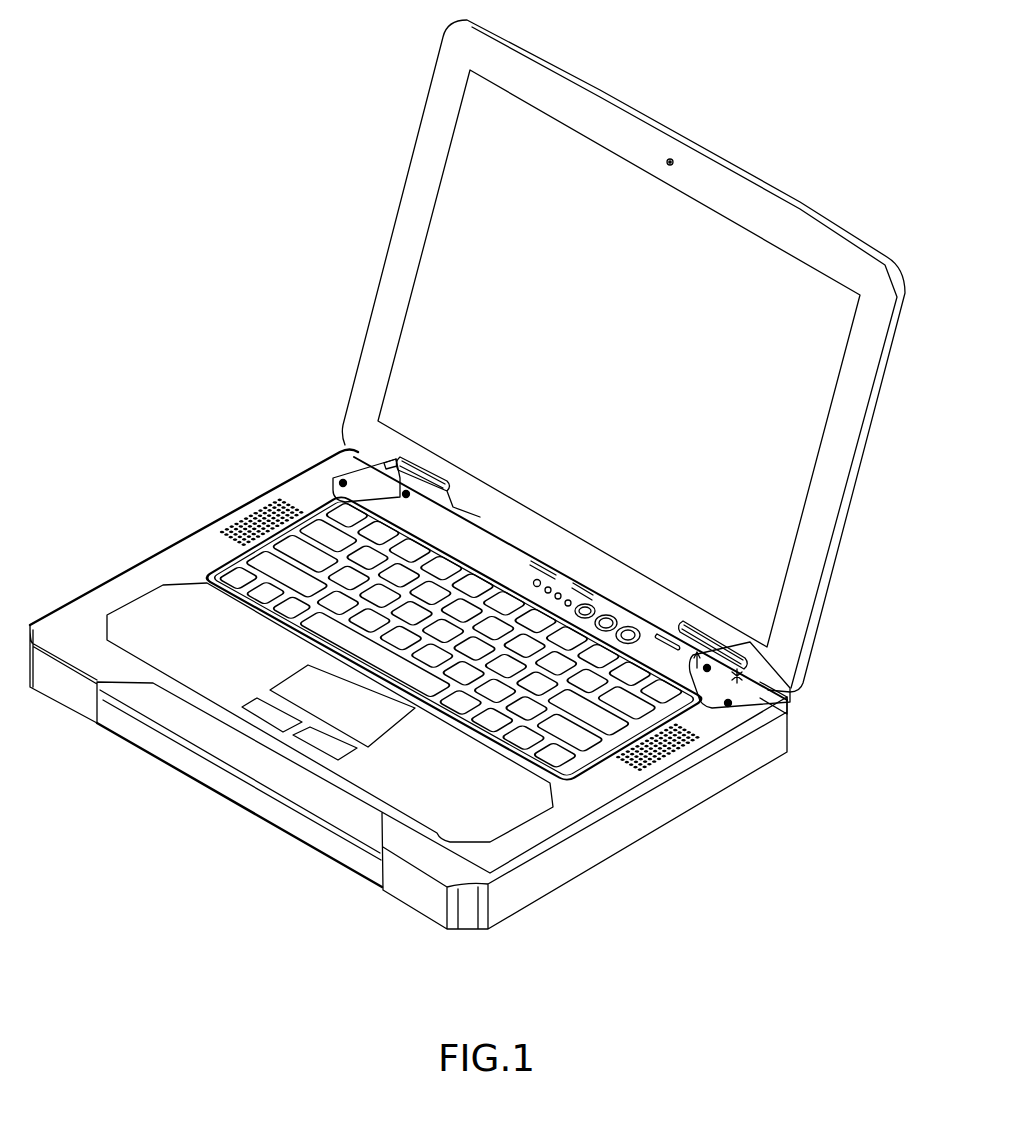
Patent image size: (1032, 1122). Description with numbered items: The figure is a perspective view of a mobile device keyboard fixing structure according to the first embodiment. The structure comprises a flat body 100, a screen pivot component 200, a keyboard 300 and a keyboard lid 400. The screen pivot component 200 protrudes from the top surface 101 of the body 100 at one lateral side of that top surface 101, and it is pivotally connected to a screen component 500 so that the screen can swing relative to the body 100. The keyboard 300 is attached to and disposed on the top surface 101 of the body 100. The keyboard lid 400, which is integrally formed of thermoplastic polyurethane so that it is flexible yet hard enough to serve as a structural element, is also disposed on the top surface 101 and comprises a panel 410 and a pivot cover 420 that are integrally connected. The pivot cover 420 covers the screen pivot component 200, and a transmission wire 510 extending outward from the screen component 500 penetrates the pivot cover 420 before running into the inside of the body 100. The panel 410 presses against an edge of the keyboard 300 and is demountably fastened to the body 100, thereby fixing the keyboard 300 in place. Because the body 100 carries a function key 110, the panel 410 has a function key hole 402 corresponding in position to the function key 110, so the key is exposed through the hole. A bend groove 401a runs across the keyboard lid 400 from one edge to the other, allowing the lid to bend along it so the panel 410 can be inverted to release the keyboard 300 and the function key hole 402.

The body 100 is at (687, 800).
The top surface 101 is at (297, 487).
The function key 110 is at (629, 625).
The screen pivot component 200 is at (777, 617).
The keyboard 300 is at (587, 787).
The keyboard lid 400 is at (745, 662).
The bend groove 401a is at (429, 475).
The function key hole 402 is at (643, 628).
The panel 410 is at (718, 705).
The pivot cover 420 is at (230, 517).
The screen component 500 is at (813, 541).
The transmission wire 510 is at (387, 470).